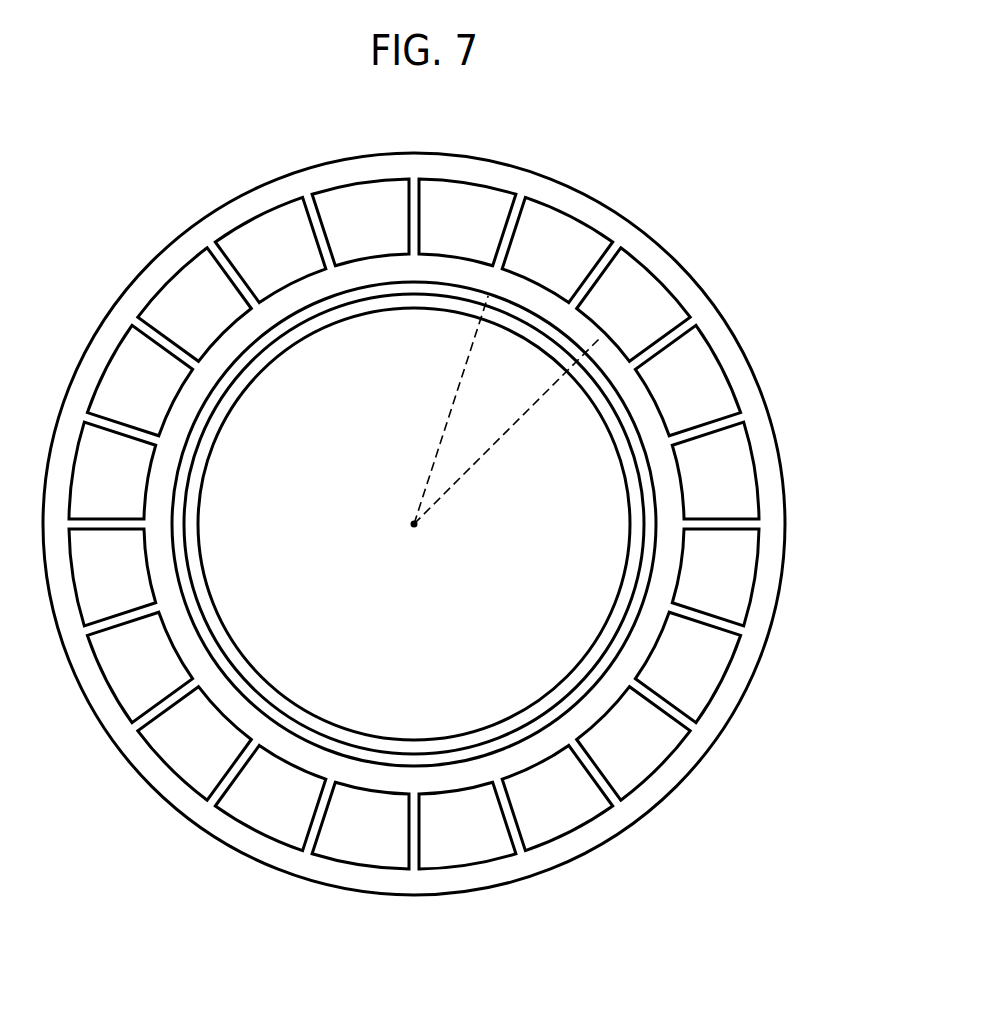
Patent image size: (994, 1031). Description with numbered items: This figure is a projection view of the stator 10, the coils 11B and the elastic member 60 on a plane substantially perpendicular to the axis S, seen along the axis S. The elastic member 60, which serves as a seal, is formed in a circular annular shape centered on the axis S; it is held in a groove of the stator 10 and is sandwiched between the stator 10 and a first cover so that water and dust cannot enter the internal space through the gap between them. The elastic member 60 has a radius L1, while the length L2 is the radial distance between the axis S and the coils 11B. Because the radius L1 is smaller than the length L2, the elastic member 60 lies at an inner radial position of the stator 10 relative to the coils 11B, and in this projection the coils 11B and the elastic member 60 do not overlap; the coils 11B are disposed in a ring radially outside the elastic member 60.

The stator 10 is at (767, 522).
The coils 11B is at (650, 300).
The elastic member 60 is at (630, 430).
The axis S is at (414, 529).
The radius L1 is at (452, 402).
The length L2 is at (482, 456).